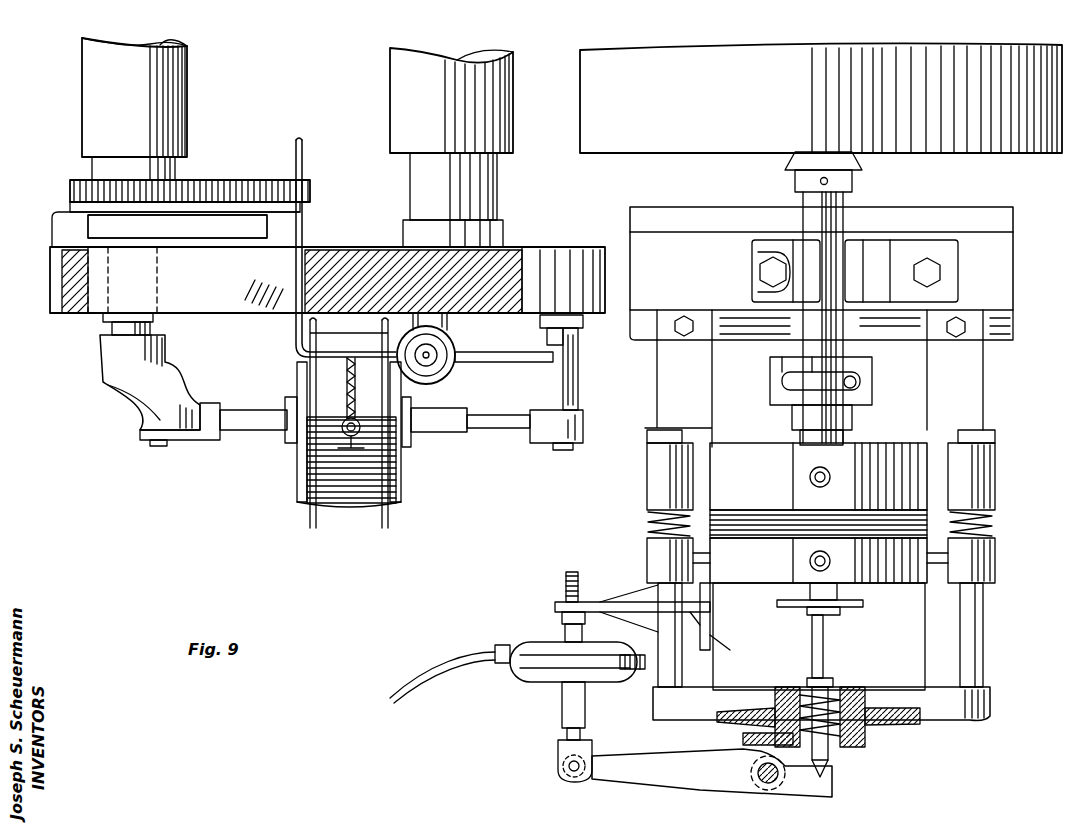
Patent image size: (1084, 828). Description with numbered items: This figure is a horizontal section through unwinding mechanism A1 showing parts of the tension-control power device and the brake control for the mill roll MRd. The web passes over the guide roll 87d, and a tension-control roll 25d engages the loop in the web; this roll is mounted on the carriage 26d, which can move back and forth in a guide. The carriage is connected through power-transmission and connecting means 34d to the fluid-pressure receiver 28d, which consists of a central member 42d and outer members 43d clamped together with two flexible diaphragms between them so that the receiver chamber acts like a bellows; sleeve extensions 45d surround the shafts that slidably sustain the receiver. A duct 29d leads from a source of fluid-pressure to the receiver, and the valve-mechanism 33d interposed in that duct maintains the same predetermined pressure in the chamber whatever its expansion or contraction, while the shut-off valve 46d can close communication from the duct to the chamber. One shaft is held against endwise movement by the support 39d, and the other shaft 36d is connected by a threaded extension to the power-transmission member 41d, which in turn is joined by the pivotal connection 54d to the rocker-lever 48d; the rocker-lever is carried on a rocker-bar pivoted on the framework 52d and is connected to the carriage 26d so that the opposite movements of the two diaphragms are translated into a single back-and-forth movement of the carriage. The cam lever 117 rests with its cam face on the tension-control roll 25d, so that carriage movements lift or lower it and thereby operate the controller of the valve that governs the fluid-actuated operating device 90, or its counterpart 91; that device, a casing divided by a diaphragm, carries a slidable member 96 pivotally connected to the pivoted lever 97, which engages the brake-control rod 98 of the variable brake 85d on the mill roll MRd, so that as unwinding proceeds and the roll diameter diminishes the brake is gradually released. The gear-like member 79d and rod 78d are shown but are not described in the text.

The tension-control roll 25d is at (134, 109).
The gear 79d is at (80, 178).
The cam lever 117 is at (232, 222).
The rod 78d is at (305, 182).
The duct 29d is at (305, 222).
The guide roll 87d is at (492, 124).
The framework 52d is at (495, 258).
The carriage 26d is at (110, 330).
The rocker-lever 48d is at (143, 408).
The power-transmission member 41d is at (203, 441).
The pivotal connection 54d is at (157, 447).
The power-transmission and connecting means 34d is at (133, 440).
The sleeve extension 45d is at (270, 402).
The fluid-pressure receiver 28d is at (332, 512).
The outer member 43d is at (298, 500).
The central member 42d is at (398, 468).
The shut-off valve 46d is at (340, 430).
The valve-mechanism 33d is at (455, 345).
The shaft 36d is at (503, 436).
The support 39d is at (580, 392).
The mill roll MRd is at (821, 98).
The variable brake 85d is at (821, 421).
The brake-control rod 98 is at (826, 648).
The pivoted lever 97 is at (678, 765).
The slidable member 96 is at (586, 742).
The fluid-actuated operating device 90 is at (545, 684).
The fluid-actuated operating device 91 is at (452, 660).